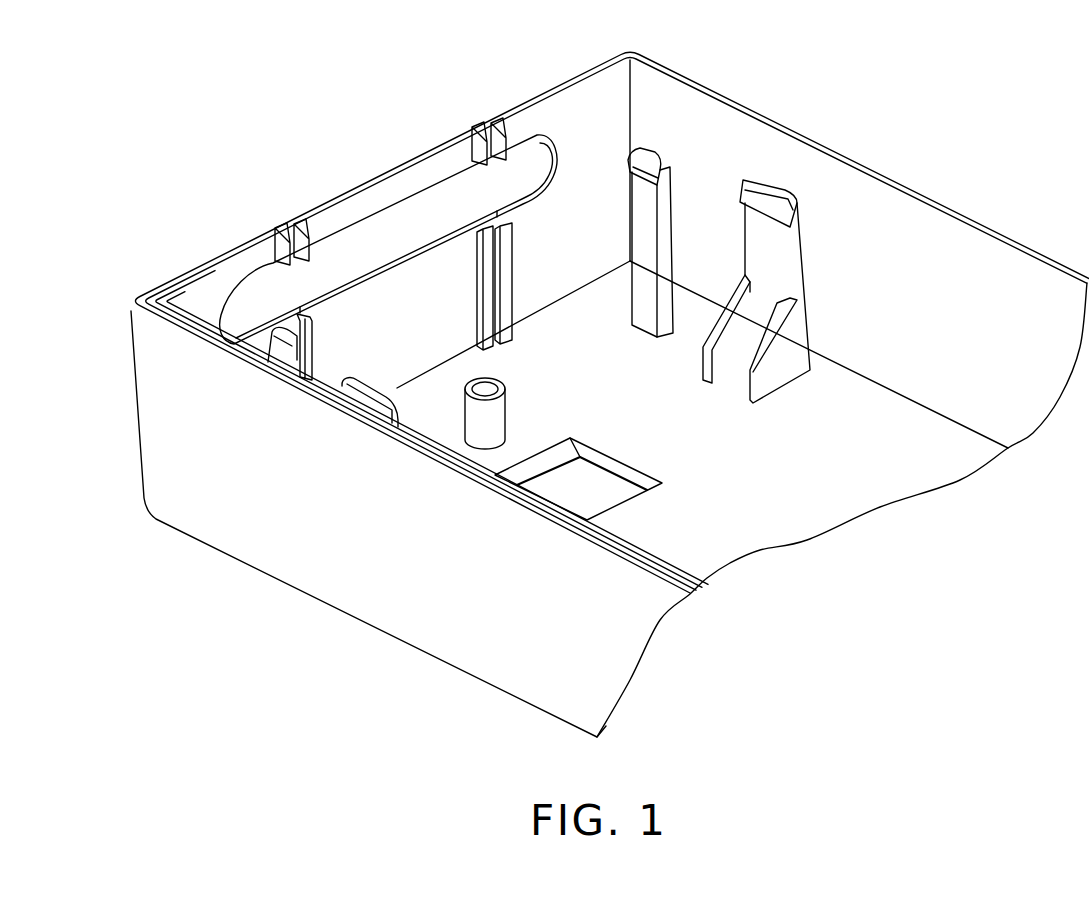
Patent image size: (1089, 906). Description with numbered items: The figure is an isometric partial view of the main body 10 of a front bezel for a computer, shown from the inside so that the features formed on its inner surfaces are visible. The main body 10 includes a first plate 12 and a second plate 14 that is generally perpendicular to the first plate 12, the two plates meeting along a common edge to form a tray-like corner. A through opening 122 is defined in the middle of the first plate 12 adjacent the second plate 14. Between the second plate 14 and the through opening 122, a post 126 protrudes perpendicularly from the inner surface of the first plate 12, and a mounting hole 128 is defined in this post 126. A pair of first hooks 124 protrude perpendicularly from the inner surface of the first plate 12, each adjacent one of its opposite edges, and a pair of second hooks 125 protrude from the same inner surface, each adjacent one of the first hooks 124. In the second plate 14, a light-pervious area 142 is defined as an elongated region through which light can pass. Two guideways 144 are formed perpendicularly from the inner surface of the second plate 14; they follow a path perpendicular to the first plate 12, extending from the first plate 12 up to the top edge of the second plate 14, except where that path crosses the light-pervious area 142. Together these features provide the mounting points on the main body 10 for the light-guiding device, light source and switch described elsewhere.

The main body 10 is at (950, 192).
The first plate 12 is at (890, 472).
The second plate 14 is at (590, 102).
The through opening 122 is at (602, 490).
The first hooks 124 is at (767, 200).
The second hooks 125 is at (647, 150).
The post 126 is at (490, 427).
The mounting hole 128 is at (490, 390).
The light-pervious area 142 is at (407, 222).
The guideways 144 is at (478, 148).